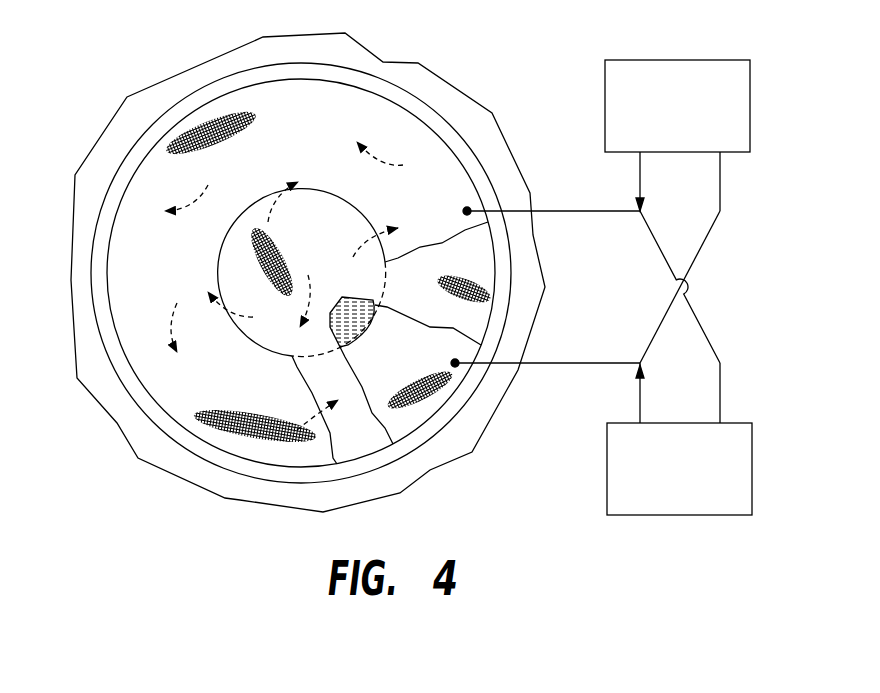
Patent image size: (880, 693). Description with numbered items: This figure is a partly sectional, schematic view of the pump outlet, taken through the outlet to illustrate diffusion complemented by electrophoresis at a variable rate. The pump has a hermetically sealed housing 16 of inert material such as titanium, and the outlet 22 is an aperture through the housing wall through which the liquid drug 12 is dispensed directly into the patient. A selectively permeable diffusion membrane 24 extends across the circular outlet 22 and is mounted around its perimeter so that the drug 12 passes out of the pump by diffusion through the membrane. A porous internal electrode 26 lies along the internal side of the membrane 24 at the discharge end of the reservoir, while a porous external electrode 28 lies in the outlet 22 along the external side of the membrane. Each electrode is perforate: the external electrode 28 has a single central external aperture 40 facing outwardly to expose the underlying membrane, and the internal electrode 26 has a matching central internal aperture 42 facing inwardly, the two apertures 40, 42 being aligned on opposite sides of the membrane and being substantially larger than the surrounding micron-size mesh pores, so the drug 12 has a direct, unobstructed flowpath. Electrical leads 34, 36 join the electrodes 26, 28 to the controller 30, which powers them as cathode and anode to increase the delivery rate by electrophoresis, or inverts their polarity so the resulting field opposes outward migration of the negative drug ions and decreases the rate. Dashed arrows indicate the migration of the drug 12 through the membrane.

The liquid drug 12 is at (378, 158).
The housing 16 is at (398, 62).
The outlet 22 is at (122, 185).
The diffusion membrane 24 is at (334, 264).
The internal electrode 26 is at (409, 355).
The external electrode 28 is at (166, 257).
The controller 30 is at (638, 58).
The electrical lead 34 is at (556, 363).
The electrical lead 36 is at (580, 211).
The external aperture 40 is at (322, 190).
The internal aperture 42 is at (368, 303).